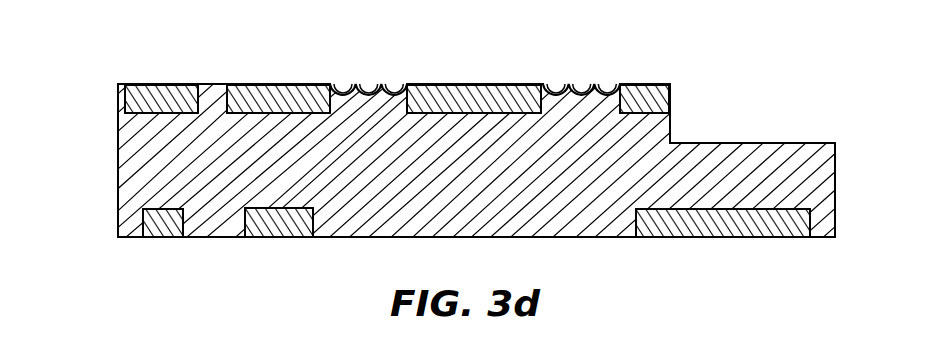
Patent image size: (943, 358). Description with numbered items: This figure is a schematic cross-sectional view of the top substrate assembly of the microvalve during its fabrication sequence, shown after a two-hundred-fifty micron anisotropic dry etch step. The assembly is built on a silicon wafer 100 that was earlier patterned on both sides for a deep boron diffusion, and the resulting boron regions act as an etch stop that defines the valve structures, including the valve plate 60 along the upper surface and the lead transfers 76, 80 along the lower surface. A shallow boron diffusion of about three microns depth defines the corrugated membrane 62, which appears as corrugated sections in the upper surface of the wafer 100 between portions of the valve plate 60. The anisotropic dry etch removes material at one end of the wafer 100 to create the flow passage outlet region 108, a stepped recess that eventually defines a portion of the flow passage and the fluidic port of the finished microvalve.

The silicon wafer 100 is at (122, 165).
The flow passage outlet region 108 is at (736, 143).
The valve plate 60 is at (478, 85).
The corrugated membrane 62 is at (371, 72).
The lead transfer 76 is at (150, 218).
The lead transfer 80 is at (725, 228).